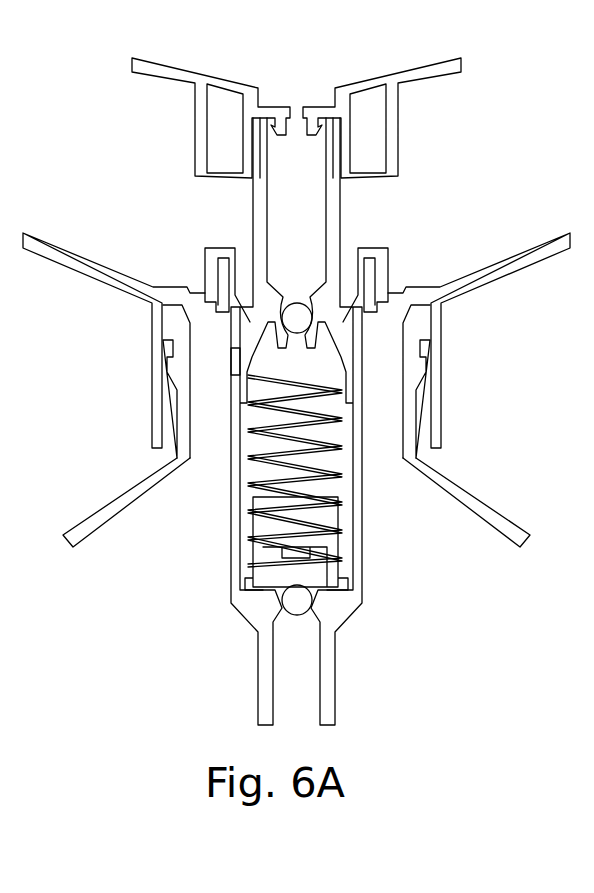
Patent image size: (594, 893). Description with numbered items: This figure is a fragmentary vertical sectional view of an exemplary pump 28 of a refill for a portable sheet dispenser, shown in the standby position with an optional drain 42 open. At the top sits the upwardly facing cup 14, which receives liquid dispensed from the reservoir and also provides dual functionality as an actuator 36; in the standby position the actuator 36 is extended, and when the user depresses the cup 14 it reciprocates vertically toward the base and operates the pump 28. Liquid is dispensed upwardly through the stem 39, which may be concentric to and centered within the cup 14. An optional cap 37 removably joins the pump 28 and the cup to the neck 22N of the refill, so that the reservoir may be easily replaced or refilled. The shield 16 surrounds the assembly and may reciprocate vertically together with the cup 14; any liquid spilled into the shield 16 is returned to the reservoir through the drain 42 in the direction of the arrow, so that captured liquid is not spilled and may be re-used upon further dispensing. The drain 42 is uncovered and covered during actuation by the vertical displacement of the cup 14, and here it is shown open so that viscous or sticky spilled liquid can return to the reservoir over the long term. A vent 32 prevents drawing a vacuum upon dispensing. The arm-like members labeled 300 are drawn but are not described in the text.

The cup 14 is at (398, 77).
The actuator 36 is at (428, 208).
The drain 42 is at (208, 347).
The cap 37 is at (160, 305).
The neck 22N is at (177, 315).
The vent 32 is at (232, 362).
The shield 16 is at (522, 255).
The lever arm 300 is at (462, 493).
The stem 39 is at (365, 533).
The pump 28 is at (197, 592).